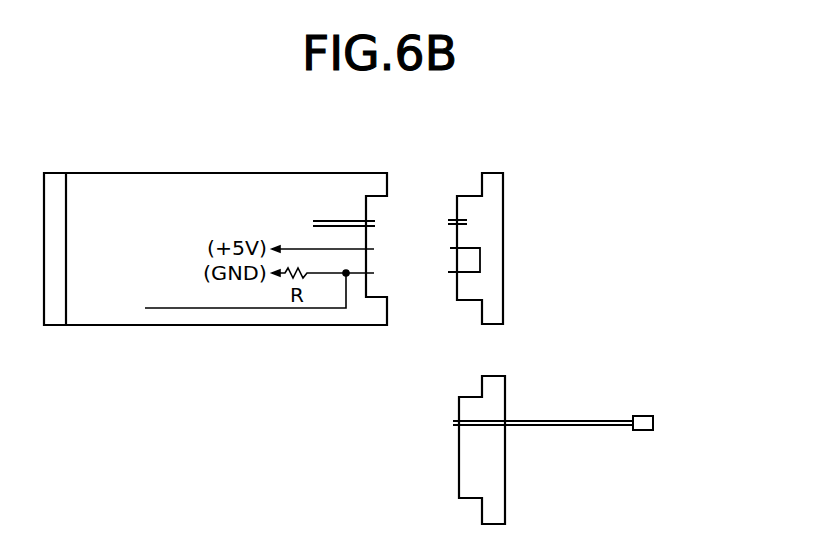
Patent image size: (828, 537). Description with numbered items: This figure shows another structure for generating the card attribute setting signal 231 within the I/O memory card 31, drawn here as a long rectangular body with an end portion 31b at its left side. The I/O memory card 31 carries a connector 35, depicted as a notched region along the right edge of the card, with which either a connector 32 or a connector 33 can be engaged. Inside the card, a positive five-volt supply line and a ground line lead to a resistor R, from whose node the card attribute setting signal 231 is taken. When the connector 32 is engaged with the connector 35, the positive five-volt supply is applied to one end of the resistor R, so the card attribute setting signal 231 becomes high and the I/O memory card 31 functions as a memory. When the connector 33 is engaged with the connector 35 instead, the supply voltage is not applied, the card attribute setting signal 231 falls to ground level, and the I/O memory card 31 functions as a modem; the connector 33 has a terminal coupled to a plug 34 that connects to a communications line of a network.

The I/O memory card 31 is at (142, 173).
The end portion of base plate 31b is at (53, 173).
The connector 35 is at (378, 216).
The card attribute setting signal 231 is at (223, 308).
The connector 32 is at (490, 173).
The connector 33 is at (491, 376).
The plug 34 is at (640, 416).